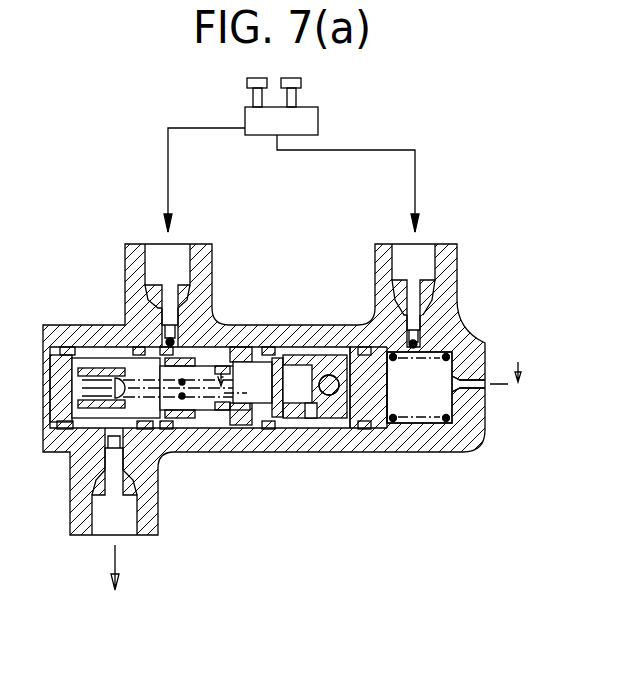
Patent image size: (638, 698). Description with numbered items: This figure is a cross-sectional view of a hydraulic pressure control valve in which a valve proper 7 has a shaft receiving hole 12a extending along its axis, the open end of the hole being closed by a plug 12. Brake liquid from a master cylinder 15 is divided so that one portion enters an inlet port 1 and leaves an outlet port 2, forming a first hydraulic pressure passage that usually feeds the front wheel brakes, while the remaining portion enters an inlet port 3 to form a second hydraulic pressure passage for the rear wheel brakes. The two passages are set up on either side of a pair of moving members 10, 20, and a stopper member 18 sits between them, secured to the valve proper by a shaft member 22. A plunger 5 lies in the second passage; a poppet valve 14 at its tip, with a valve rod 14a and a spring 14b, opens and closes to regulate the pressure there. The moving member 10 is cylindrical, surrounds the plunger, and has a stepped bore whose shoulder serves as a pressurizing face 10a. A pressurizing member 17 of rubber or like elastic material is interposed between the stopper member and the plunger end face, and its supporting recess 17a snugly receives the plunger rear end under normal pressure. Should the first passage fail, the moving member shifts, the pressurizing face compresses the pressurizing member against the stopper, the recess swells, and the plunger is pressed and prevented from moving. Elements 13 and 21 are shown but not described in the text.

The inlet port 1 is at (420, 256).
The outlet port 2 is at (110, 522).
The inlet port 3 is at (158, 242).
The plunger 5 is at (256, 380).
The valve proper 7 is at (266, 433).
The moving member 10 is at (258, 423).
The pressurizing face 10a is at (282, 425).
The plug 12 is at (64, 346).
The shaft receiving hole 12a is at (318, 425).
The seal ring 13 is at (430, 352).
The poppet valve 14 is at (103, 362).
The valve rod 14a is at (58, 452).
The spring 14b is at (154, 430).
The master cylinder 15 is at (362, 128).
The pressurizing member 17 is at (305, 362).
The supporting recess 17a is at (302, 357).
The stopper member 18 is at (368, 365).
The moving member 20 is at (400, 450).
The sleeve 21 is at (200, 418).
The shaft member 22 is at (372, 450).